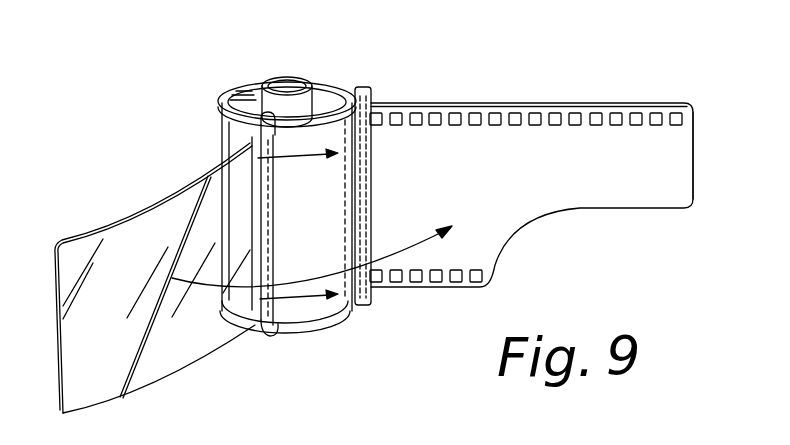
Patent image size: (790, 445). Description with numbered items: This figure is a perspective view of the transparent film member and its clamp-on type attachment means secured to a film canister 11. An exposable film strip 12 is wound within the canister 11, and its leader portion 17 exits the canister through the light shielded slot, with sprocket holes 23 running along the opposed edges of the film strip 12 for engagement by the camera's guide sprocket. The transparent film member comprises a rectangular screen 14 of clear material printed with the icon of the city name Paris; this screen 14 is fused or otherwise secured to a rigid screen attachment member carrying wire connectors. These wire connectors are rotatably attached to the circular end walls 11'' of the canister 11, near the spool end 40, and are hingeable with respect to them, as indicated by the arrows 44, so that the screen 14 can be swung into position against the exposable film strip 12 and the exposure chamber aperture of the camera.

The film canister 11 is at (299, 199).
The circular end walls 11'' is at (275, 210).
The exposable film strip 12 is at (612, 171).
The rectangular screen 14 is at (140, 235).
The leader portion 17 is at (658, 146).
The sprocket holes 23 is at (597, 114).
The spool end 40 is at (305, 153).
The arrows 44 is at (330, 108).